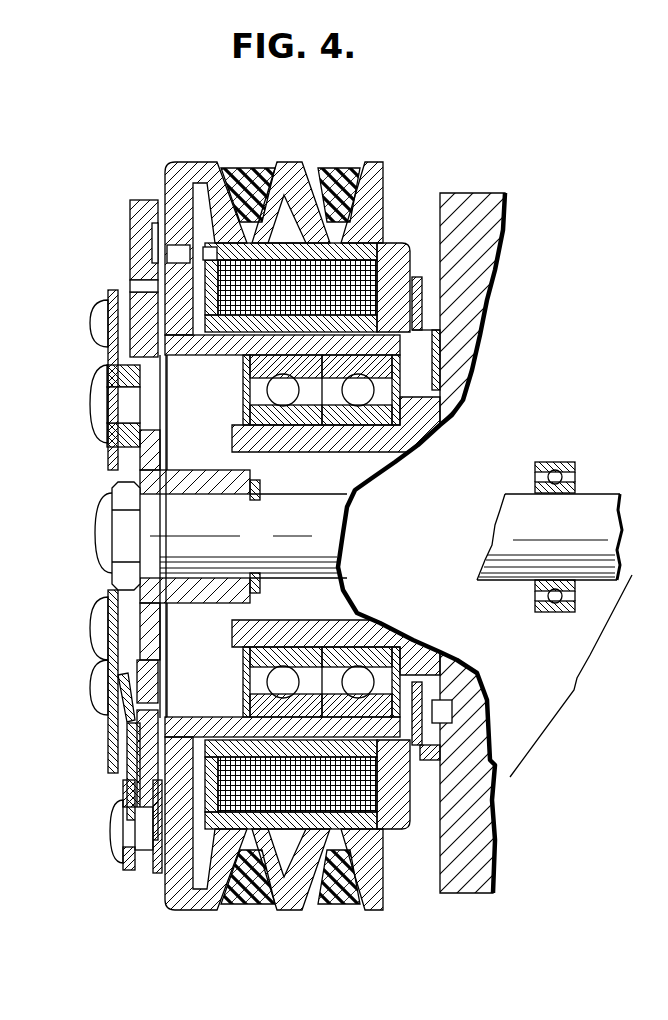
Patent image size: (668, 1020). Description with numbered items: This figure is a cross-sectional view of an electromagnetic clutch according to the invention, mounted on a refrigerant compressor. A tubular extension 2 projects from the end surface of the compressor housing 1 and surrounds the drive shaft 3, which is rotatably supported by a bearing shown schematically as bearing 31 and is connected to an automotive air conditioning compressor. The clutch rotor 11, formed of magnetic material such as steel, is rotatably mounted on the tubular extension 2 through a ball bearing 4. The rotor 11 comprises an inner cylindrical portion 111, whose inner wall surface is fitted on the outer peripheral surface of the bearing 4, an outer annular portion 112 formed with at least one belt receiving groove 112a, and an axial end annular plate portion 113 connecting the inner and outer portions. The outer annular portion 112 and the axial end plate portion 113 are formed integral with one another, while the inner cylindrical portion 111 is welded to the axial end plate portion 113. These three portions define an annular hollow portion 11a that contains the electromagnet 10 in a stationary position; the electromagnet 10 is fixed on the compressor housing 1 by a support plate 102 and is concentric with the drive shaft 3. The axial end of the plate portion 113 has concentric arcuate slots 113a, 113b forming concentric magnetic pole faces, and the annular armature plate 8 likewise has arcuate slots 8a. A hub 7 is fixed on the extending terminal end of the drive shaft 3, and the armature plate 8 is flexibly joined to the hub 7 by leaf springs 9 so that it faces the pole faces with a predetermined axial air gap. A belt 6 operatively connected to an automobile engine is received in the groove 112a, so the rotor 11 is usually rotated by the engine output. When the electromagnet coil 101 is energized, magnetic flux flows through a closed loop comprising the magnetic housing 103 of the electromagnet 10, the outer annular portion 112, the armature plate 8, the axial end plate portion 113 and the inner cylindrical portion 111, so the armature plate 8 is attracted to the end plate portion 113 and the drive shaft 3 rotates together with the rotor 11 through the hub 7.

The compressor housing 1 is at (480, 293).
The tubular extension 2 is at (357, 437).
The drive shaft 3 is at (322, 535).
The bearing 4 is at (438, 422).
The belt 6 is at (243, 190).
The hub 7 is at (138, 457).
The armature plate 8 is at (130, 223).
The arcuate slots 8a is at (140, 290).
The leaf springs 9 is at (127, 783).
The electromagnet 10 is at (402, 228).
The clutch rotor 11 is at (206, 152).
The annular hollow portion 11a is at (223, 343).
The bearing 31 is at (575, 463).
The electromagnet coil 101 is at (395, 276).
The support plate 102 is at (417, 303).
The magnetic housing 103 is at (412, 252).
The inner cylindrical portion 111 is at (413, 345).
The outer annular portion 112 is at (373, 162).
The belt receiving groove 112a is at (318, 182).
The axial end annular plate portion 113 is at (160, 273).
The arcuate slot 113a is at (178, 250).
The arcuate slot 113b is at (160, 327).